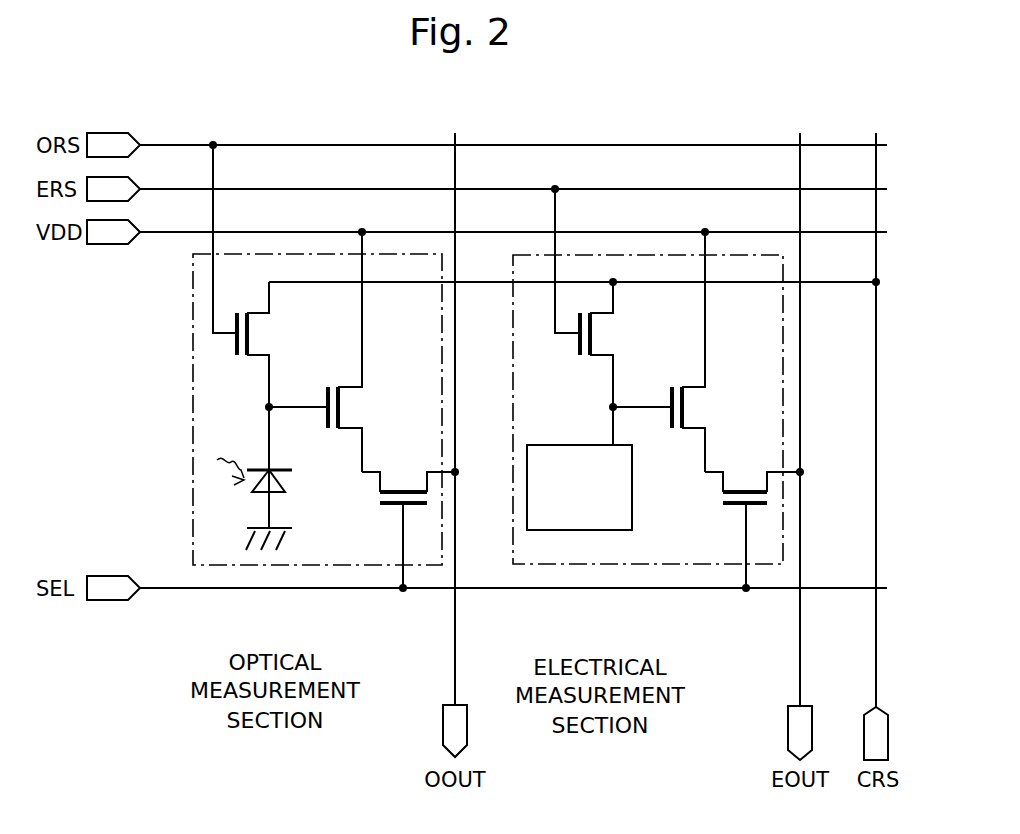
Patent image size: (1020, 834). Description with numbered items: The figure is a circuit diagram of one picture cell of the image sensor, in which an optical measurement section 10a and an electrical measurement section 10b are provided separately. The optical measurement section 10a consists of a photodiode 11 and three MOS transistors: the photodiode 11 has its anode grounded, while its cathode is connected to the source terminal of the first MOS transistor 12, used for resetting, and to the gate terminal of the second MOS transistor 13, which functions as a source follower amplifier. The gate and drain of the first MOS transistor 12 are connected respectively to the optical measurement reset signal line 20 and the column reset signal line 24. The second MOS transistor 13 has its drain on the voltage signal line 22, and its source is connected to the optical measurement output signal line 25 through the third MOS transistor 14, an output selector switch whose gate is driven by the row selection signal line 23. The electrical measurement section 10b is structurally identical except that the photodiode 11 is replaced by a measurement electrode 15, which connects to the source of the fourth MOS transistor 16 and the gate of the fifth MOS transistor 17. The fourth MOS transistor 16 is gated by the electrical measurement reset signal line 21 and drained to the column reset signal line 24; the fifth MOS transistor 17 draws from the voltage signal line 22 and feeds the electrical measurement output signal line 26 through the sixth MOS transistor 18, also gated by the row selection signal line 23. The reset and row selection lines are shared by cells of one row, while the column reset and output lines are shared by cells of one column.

The optical measurement section 10a is at (297, 565).
The electrical measurement section 10b is at (617, 564).
The photodiode 11 is at (285, 478).
The first MOS transistor 12 is at (267, 337).
The second MOS transistor 13 is at (357, 412).
The third MOS transistor 14 is at (405, 482).
The measurement electrode 15 is at (557, 444).
The fourth MOS transistor 16 is at (619, 336).
The fifth MOS transistor 17 is at (707, 406).
The sixth MOS transistor 18 is at (745, 478).
The optical measurement reset signal line 20 is at (287, 143).
The electrical measurement reset signal line 21 is at (287, 187).
The voltage signal line 22 is at (287, 230).
The row selection signal line 23 is at (195, 590).
The column reset signal line 24 is at (872, 636).
The optical measurement output signal line 25 is at (452, 638).
The electrical measurement output signal line 26 is at (797, 636).